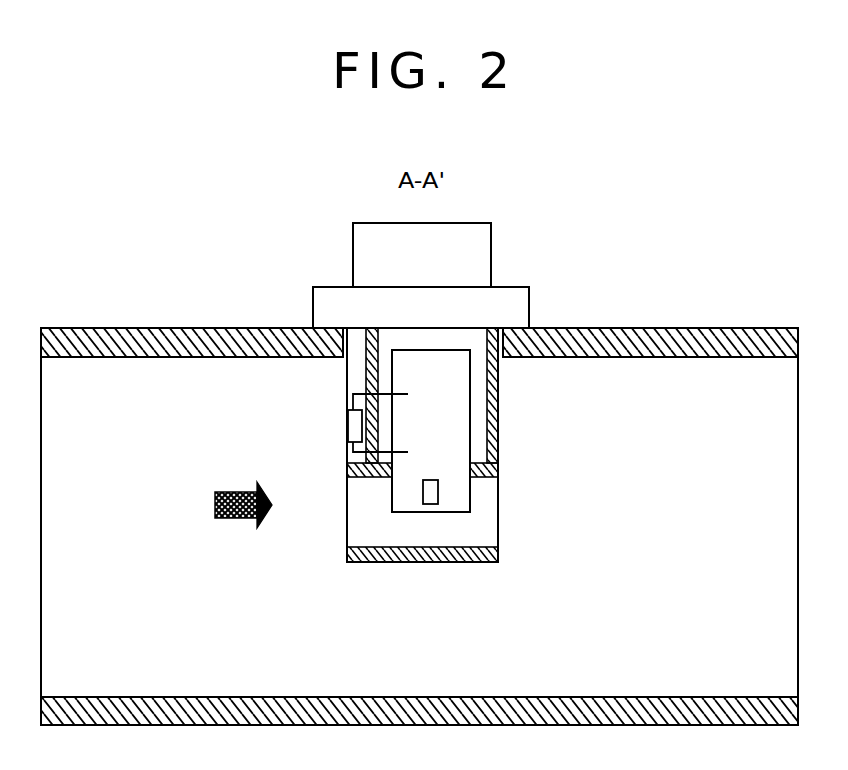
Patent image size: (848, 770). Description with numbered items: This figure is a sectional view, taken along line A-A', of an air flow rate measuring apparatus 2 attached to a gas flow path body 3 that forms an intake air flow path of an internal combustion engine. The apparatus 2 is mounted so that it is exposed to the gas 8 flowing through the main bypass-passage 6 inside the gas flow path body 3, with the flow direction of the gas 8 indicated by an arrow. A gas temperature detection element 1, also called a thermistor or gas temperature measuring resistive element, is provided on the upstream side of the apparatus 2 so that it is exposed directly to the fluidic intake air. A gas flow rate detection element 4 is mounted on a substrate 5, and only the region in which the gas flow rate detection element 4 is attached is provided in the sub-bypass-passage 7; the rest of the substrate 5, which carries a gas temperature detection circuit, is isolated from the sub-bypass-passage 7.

The gas temperature detection element 1 is at (348, 424).
The air flow rate measuring apparatus 2 is at (365, 256).
The gas flow path body 3 is at (187, 328).
The gas flow rate detection element 4 is at (438, 490).
The substrate 5 is at (445, 375).
The main bypass-passage 6 is at (188, 529).
The sub-bypass-passage 7 is at (487, 533).
The gas 8 is at (213, 500).